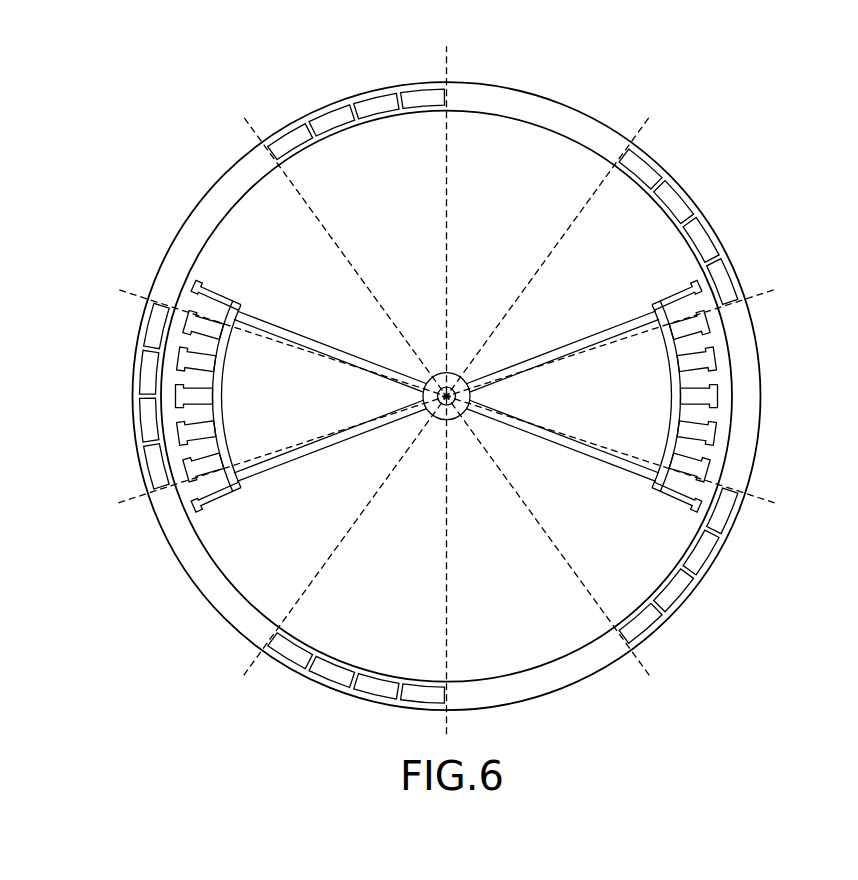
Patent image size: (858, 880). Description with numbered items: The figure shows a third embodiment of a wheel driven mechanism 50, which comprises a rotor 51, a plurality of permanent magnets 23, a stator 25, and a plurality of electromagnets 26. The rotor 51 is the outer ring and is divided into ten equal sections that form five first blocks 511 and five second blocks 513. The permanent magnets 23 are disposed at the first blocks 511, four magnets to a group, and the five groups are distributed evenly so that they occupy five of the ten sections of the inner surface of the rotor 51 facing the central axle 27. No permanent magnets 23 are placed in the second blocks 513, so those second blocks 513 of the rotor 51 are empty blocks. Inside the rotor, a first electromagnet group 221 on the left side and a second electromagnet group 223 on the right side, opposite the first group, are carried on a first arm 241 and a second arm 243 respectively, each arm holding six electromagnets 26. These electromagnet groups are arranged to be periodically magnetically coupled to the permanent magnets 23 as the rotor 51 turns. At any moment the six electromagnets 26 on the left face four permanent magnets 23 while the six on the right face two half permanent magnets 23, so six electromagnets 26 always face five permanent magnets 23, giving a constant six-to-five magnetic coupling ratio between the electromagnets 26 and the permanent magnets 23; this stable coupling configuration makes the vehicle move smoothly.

The wheel driven mechanism 50 is at (138, 146).
The rotor 51 is at (789, 292).
The first blocks 511 is at (321, 106).
The second blocks 513 is at (567, 107).
The permanent magnets 23 is at (725, 273).
The first electromagnet group 221 is at (232, 395).
The second electromagnet group 223 is at (668, 394).
The first arm 241 is at (349, 352).
The second arm 243 is at (545, 352).
The stator 25 is at (653, 488).
The electromagnets 26 is at (206, 494).
The axle 27 is at (466, 381).